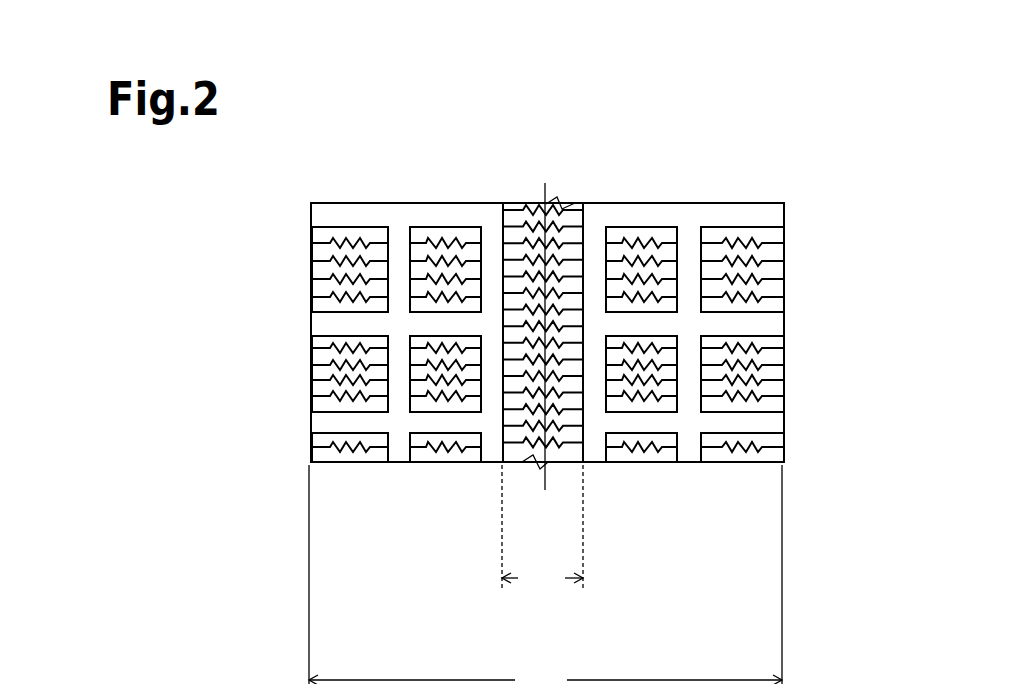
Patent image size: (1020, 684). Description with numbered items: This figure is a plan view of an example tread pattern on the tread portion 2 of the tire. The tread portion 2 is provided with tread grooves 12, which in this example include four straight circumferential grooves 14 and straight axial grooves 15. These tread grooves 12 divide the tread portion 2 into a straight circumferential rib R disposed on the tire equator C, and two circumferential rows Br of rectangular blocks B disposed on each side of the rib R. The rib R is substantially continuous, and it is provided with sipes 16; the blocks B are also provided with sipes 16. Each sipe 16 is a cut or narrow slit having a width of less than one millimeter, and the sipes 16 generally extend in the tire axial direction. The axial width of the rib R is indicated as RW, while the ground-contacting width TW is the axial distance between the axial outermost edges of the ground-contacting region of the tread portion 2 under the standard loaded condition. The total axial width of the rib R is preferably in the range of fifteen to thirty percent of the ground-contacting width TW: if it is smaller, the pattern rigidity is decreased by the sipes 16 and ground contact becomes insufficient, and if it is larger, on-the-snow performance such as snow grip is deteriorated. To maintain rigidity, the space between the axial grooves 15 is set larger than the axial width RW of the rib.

The tread portion 2 is at (753, 165).
The tread grooves 12 is at (240, 415).
The circumferential grooves 14 is at (397, 445).
The axial grooves 15 is at (330, 429).
The sipes 16 is at (573, 226).
The blocks B is at (332, 226).
The circumferential rows of blocks Br is at (513, 277).
The circumferential rib R is at (519, 190).
The tire equator C is at (548, 319).
The ground-contacting width TW is at (545, 574).
The axial width of the rib RW is at (542, 529).